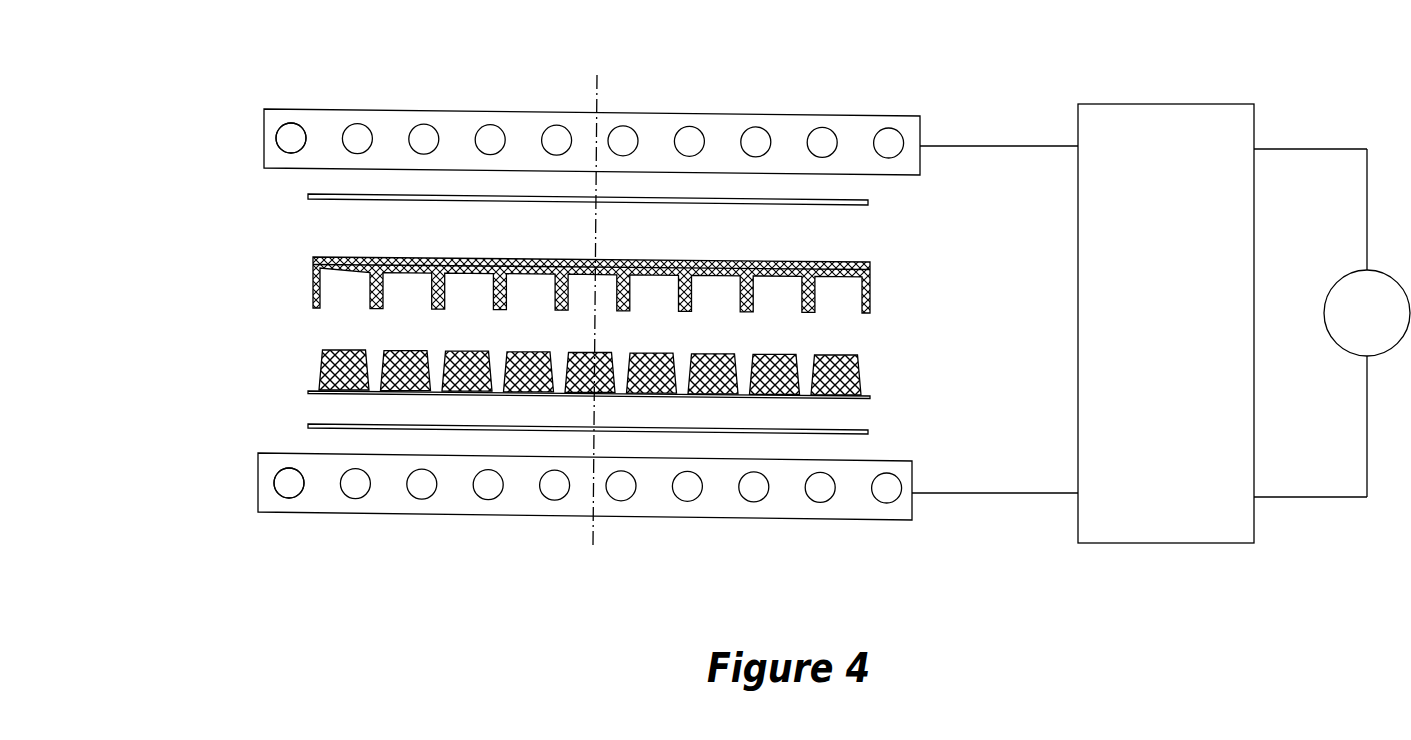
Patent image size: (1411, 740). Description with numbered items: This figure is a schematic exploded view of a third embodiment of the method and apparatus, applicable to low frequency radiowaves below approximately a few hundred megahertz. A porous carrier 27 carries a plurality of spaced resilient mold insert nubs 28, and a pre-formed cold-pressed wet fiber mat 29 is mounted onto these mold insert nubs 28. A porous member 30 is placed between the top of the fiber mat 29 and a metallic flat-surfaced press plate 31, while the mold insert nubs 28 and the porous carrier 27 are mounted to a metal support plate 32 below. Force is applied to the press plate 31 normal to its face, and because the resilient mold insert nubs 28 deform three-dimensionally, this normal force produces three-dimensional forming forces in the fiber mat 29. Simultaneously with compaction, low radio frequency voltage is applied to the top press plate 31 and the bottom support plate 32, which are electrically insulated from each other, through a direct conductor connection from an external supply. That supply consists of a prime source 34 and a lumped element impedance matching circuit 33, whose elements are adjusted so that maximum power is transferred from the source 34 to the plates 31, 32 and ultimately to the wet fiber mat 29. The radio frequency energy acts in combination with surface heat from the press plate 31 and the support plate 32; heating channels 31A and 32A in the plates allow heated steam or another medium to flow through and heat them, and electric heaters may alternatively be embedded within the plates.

The porous carrier 27 is at (308, 425).
The resilient mold insert nubs 28 is at (317, 370).
The pre-formed cold-pressed wet fiber mat 29 is at (313, 280).
The porous member 30 is at (308, 197).
The metallic flat-surfaced press plate 31 is at (258, 133).
The heating channels 31A is at (285, 125).
The metal support plate 32 is at (252, 488).
The heating channels 32A is at (283, 495).
The lumped element impedance matching circuit 33 is at (1083, 323).
The prime source 34 is at (1332, 323).